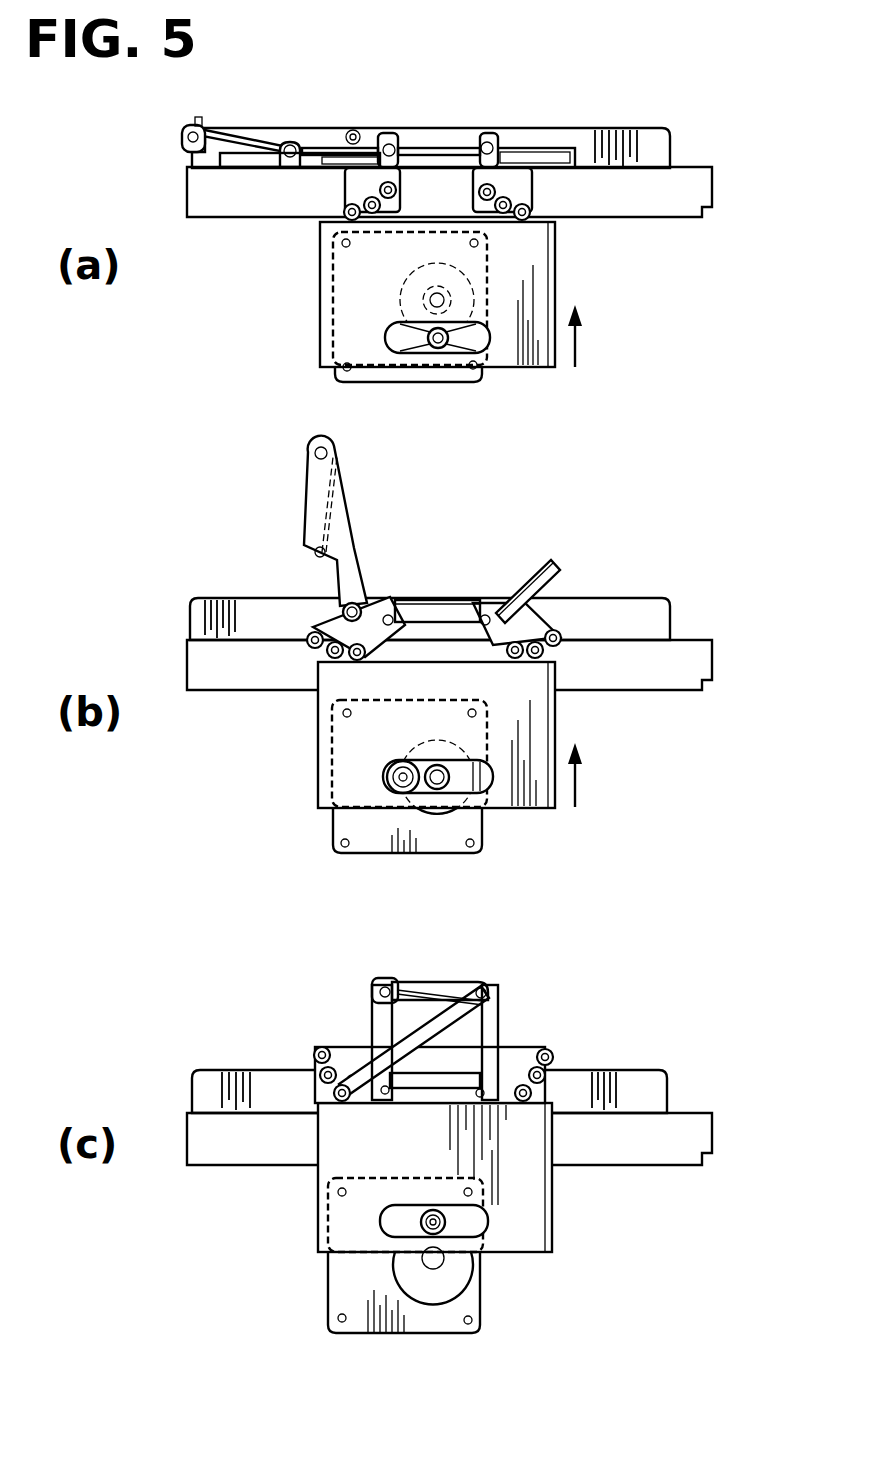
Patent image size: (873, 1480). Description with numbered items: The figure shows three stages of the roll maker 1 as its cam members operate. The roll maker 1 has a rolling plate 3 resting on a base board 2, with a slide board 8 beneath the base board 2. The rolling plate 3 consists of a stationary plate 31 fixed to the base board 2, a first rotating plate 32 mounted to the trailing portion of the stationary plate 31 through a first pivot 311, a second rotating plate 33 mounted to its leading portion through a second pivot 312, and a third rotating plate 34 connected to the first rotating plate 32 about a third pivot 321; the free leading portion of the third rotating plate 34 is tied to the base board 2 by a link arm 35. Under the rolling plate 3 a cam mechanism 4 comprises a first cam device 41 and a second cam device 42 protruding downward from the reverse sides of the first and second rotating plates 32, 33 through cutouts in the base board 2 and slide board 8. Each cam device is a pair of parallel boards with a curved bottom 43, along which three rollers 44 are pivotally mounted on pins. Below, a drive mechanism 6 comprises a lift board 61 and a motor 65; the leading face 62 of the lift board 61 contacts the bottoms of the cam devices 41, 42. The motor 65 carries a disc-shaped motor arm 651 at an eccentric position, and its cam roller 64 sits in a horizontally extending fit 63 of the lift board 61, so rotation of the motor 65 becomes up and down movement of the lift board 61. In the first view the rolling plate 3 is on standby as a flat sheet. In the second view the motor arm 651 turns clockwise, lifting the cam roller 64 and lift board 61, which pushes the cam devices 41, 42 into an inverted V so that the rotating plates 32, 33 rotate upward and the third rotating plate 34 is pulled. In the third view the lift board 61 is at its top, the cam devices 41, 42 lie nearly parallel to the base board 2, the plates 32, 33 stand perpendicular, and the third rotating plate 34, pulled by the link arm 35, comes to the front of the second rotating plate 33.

The roll maker 1 is at (668, 115).
The base board 2 is at (672, 146).
The rolling plate 3 is at (560, 115).
The stationary plate 31 is at (437, 128).
The first pivot 311 is at (388, 130).
The second pivot 312 is at (484, 127).
The first rotating plate 32 is at (318, 143).
The third pivot 321 is at (288, 142).
The second rotating plate 33 is at (565, 148).
The third rotating plate 34 is at (203, 116).
The link arm 35 is at (258, 130).
The cam mechanism 4 is at (300, 190).
The first cam device 41 is at (343, 195).
The second cam device 42 is at (524, 1048).
The curved bottom 43 is at (400, 210).
The rollers 44 is at (347, 213).
The drive mechanism 6 is at (305, 325).
The lift board 61 is at (548, 370).
The leading face 62 is at (503, 228).
The fit 63 is at (390, 348).
The cam roller 64 is at (430, 346).
The motor 65 is at (347, 383).
The motor arm 651 is at (478, 343).
The slide board 8 is at (703, 196).